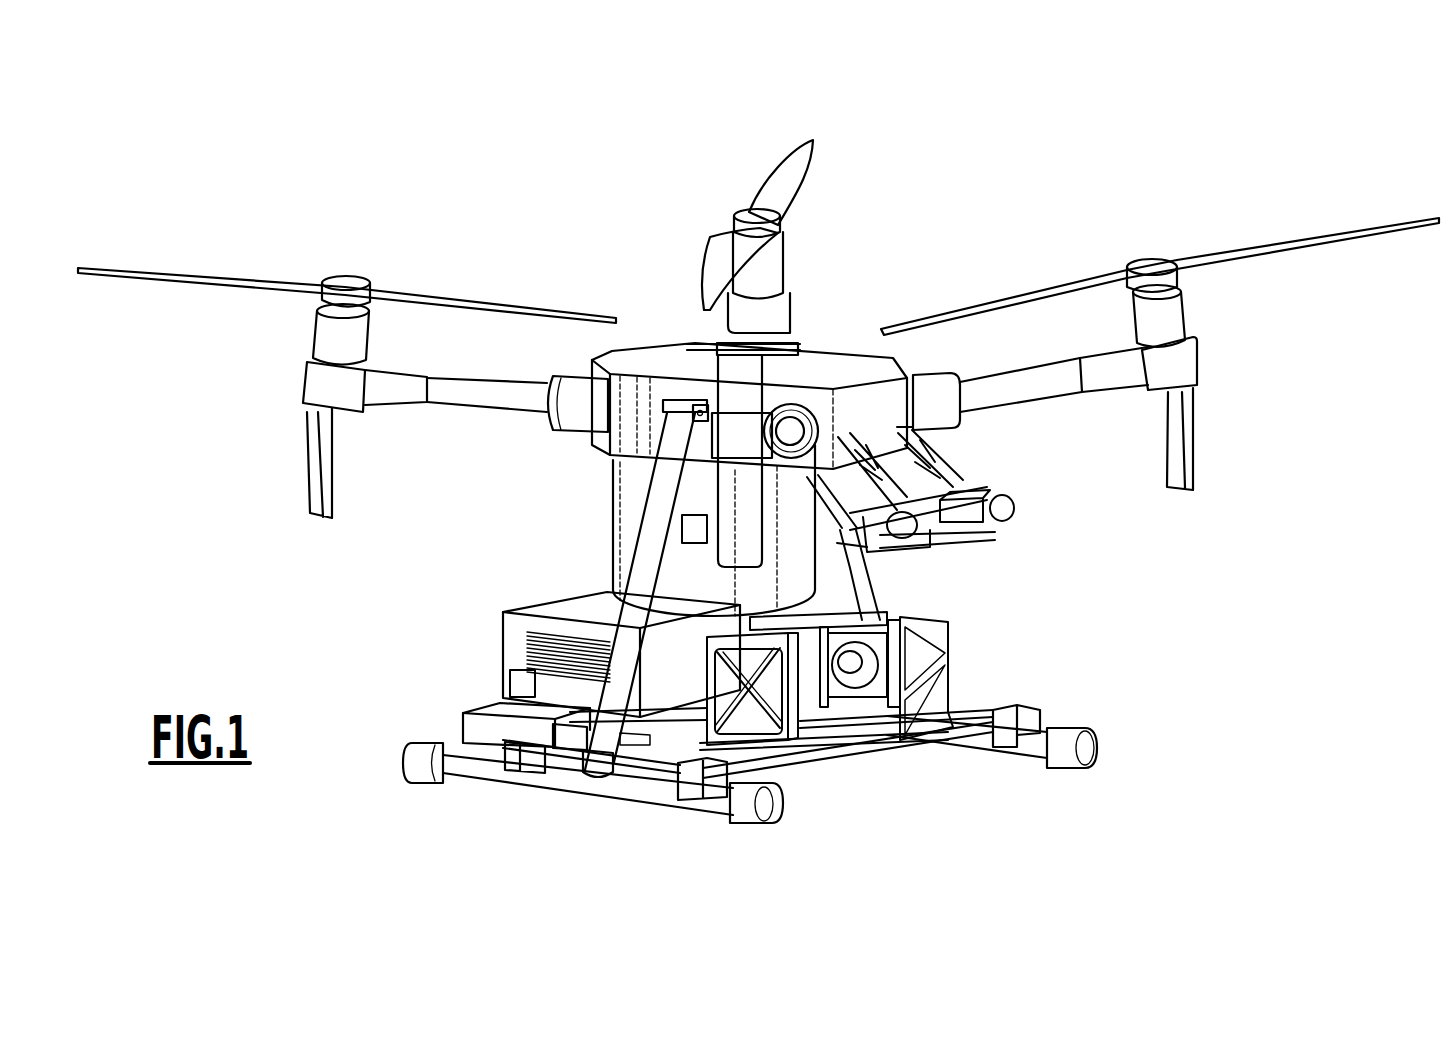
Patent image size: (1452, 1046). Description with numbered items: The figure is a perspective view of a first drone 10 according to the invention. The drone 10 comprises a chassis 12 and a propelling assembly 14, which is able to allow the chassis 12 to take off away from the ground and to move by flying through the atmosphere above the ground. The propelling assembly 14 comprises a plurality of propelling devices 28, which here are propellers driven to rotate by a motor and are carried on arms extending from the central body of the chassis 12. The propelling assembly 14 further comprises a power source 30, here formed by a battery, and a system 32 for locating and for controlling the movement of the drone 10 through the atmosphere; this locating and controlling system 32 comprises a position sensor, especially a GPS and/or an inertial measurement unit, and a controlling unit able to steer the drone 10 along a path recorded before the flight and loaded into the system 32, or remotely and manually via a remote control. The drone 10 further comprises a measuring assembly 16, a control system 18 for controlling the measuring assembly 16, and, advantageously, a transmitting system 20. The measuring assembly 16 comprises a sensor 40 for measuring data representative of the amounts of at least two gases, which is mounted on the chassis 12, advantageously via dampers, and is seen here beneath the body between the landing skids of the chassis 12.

The drone 10 is at (935, 142).
The chassis 12 is at (1150, 748).
The propelling assembly 14 is at (1255, 338).
The measuring assembly 16 is at (888, 785).
The control system 18 is at (520, 683).
The transmitting system 20 is at (560, 607).
The propelling devices 28 is at (350, 283).
The power source 30 is at (632, 505).
The locating and controlling system 32 is at (693, 532).
The sensor 40 is at (962, 660).